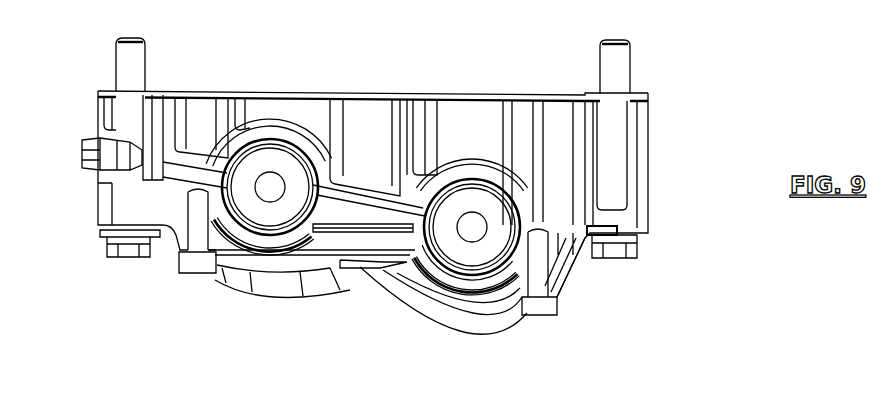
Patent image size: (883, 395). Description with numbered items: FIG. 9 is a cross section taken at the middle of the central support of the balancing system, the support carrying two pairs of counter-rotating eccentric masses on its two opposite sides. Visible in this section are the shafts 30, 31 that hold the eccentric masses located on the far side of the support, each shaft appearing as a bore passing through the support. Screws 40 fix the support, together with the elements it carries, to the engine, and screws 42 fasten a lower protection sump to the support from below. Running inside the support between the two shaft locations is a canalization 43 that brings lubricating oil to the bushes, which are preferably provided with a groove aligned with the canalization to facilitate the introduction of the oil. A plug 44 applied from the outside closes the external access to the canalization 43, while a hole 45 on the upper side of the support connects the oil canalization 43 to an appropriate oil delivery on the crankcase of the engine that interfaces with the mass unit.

The shaft 30 is at (262, 200).
The shaft 31 is at (458, 240).
The screws 40 is at (130, 53).
The screws 42 is at (192, 265).
The canalization 43 is at (190, 170).
The plug 44 is at (84, 152).
The hole 45 is at (155, 106).